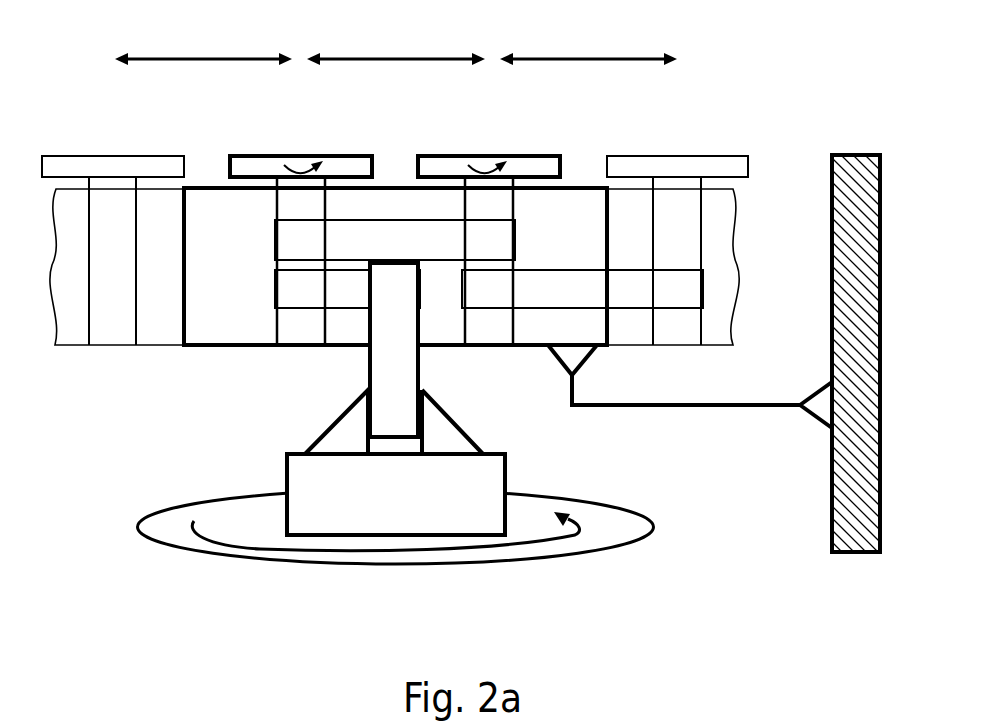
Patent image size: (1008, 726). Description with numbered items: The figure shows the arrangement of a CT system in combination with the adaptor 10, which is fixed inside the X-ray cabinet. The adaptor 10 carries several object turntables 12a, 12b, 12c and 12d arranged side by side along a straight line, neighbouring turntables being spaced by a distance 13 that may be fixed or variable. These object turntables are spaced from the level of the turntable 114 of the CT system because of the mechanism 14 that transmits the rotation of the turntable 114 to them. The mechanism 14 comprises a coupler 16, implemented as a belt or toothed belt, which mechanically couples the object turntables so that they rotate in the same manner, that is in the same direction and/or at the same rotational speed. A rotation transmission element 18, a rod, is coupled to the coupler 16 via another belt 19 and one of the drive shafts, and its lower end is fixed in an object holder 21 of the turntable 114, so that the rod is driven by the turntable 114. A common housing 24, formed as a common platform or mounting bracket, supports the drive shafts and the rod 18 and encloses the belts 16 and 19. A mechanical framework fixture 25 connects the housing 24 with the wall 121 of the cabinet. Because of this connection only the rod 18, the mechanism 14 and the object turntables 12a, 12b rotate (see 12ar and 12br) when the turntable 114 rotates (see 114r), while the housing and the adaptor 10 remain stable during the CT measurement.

The adaptor 10 is at (586, 170).
The object turntable 12a is at (267, 168).
The rotation of object turntable 12a 12ar is at (302, 172).
The object turntable 12b is at (457, 168).
The rotation of object turntable 12b 12br is at (487, 172).
The object turntable 12c is at (677, 168).
The object turntable 12d is at (107, 168).
The distance 13 is at (396, 44).
The mechanism 14 is at (206, 318).
The coupler 16 is at (342, 242).
The rotation transmission element 18 is at (410, 378).
The belt 19 is at (275, 290).
The object holder 21 is at (495, 470).
The common housing 24 is at (215, 336).
The mechanical framework fixture 25 is at (723, 406).
The turntable 114 is at (583, 545).
The rotation of turntable 114 114r is at (437, 553).
The wall 121 is at (833, 495).